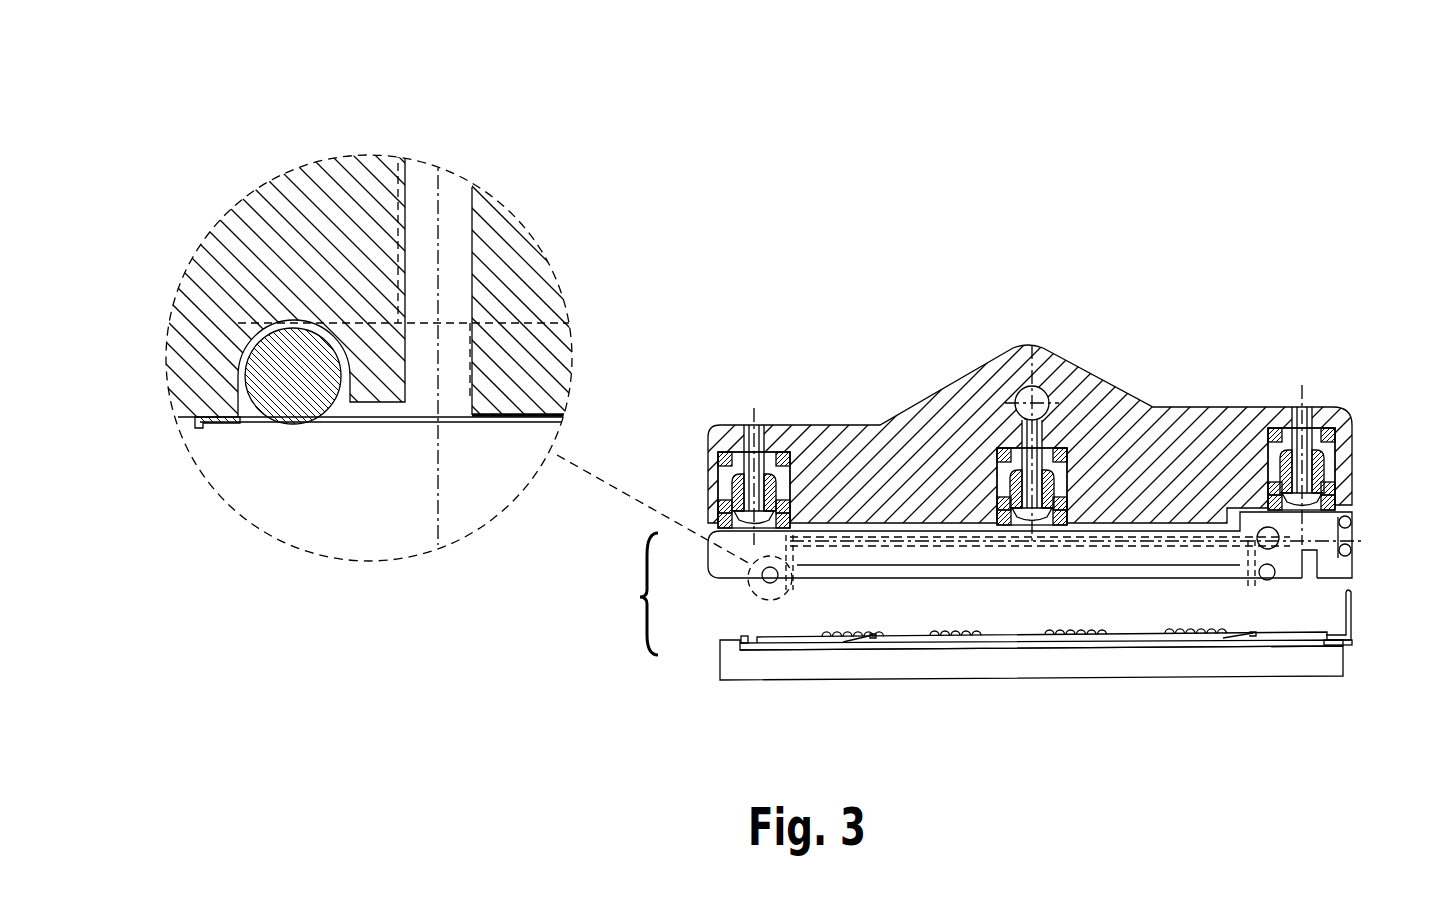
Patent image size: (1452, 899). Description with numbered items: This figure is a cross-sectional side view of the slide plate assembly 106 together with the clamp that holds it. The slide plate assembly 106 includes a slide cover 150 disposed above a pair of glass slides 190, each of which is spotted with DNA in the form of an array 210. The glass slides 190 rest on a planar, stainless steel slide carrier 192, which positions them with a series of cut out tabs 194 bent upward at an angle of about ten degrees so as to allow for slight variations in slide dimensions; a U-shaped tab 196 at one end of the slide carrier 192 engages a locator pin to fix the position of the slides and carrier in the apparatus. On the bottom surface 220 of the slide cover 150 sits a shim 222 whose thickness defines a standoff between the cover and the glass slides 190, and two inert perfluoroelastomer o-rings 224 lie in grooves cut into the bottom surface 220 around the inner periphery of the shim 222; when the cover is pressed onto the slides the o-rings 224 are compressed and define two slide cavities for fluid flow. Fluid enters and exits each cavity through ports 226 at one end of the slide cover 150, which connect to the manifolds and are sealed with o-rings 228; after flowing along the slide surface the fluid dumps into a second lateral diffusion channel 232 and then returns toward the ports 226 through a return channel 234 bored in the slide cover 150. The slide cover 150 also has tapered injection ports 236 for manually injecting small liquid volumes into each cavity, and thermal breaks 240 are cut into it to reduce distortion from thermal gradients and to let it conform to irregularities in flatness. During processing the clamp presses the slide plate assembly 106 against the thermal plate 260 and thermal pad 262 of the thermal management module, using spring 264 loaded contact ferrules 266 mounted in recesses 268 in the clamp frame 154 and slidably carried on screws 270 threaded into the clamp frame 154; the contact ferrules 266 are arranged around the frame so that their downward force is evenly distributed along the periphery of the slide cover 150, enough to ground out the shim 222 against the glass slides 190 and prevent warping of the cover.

The slide plate assembly 106 is at (626, 594).
The slide cover 150 is at (1343, 568).
The clamp frame 154 is at (1117, 390).
The glass slides 190 is at (772, 635).
The slide carrier 192 is at (1353, 637).
The cut out tabs 194 is at (850, 640).
The U-shaped tab 196 is at (1353, 608).
The array 210 is at (973, 628).
The bottom surface 220 is at (716, 589).
The shim 222 is at (199, 427).
The o-rings 224 is at (283, 395).
The ports 226 is at (1352, 530).
The o-rings 228 is at (1350, 520).
The second lateral diffusion channel 232 is at (375, 410).
The return channel 234 is at (1047, 540).
The injection ports 236 is at (453, 200).
The thermal breaks 240 is at (1311, 578).
The thermal plate 260 is at (899, 665).
The thermal pad 262 is at (767, 652).
The spring 264 is at (726, 452).
The contact ferrules 266 is at (737, 485).
The recesses 268 is at (780, 468).
The screws 270 is at (758, 425).